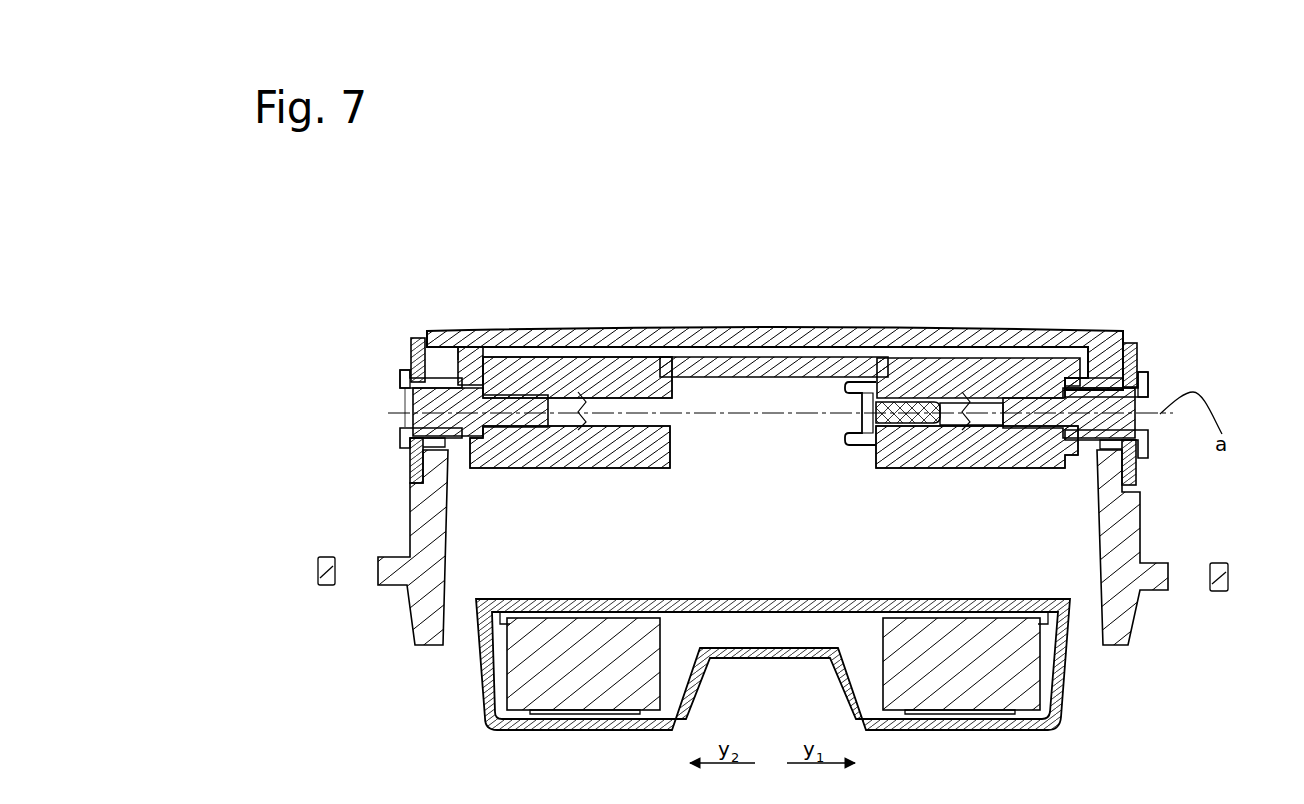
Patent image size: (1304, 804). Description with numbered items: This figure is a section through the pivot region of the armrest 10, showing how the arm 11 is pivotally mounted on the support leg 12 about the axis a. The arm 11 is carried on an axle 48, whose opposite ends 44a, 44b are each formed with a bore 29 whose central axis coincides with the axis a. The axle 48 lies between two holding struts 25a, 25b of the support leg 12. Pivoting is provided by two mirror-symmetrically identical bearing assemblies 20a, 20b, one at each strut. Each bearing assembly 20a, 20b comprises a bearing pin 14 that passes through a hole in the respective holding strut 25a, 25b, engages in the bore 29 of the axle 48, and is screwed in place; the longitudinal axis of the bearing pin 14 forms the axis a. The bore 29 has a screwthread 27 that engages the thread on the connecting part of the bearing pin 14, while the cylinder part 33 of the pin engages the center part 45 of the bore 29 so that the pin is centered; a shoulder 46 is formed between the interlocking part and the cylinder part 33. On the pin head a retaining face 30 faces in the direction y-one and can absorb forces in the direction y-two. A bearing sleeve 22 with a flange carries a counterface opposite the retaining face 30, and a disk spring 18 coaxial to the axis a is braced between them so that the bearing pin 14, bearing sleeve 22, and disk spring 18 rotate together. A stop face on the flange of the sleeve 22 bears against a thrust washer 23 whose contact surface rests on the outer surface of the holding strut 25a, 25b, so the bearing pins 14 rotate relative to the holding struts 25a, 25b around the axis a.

The armrest 10 is at (1027, 128).
The arm 11 is at (922, 377).
The support leg 12 is at (720, 331).
The bearing pin 14 is at (402, 378).
The disk spring 18 is at (412, 338).
The bearing assembly 20a is at (395, 391).
The bearing assembly 20b is at (1153, 350).
The bearing sleeve 22 is at (419, 338).
The thrust washer 23 is at (426, 340).
The holding strut 25a is at (408, 486).
The holding strut 25b is at (1112, 494).
The screwthread 27 is at (540, 432).
The bore 29 is at (582, 392).
The retaining face 30 is at (408, 457).
The cylinder part 33 is at (474, 436).
The end of axle 44a is at (512, 478).
The end of axle 44b is at (1062, 472).
The center part of bore 45 is at (514, 378).
The shoulder 46 is at (497, 380).
The axle 48 is at (1016, 375).